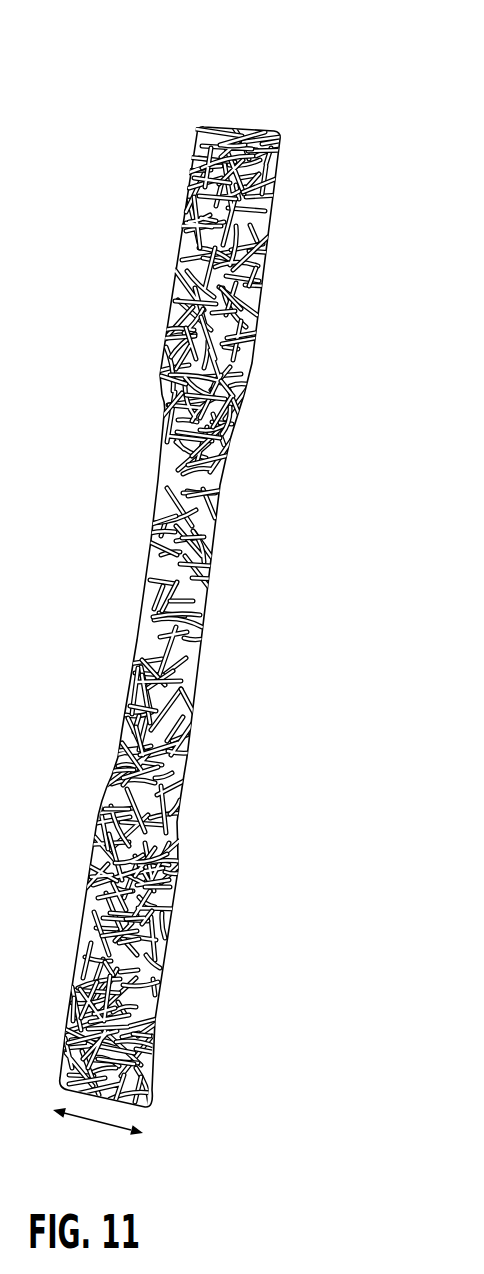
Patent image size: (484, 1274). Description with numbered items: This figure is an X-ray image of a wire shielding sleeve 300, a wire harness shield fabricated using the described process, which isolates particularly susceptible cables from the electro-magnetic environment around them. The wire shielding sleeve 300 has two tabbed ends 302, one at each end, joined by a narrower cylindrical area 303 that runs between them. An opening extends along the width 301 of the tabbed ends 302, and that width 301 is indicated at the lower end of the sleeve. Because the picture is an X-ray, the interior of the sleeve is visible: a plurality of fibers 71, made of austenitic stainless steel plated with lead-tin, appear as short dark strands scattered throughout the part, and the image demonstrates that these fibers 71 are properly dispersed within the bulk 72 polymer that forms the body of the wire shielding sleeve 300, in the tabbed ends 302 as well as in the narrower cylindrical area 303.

The wire shielding sleeve 300 is at (301, 67).
The width 301 is at (98, 1134).
The tabbed ends 302 is at (90, 935).
The narrower cylindrical area 303 is at (148, 612).
The fibers 71 is at (183, 730).
The bulk polymer 72 is at (158, 518).